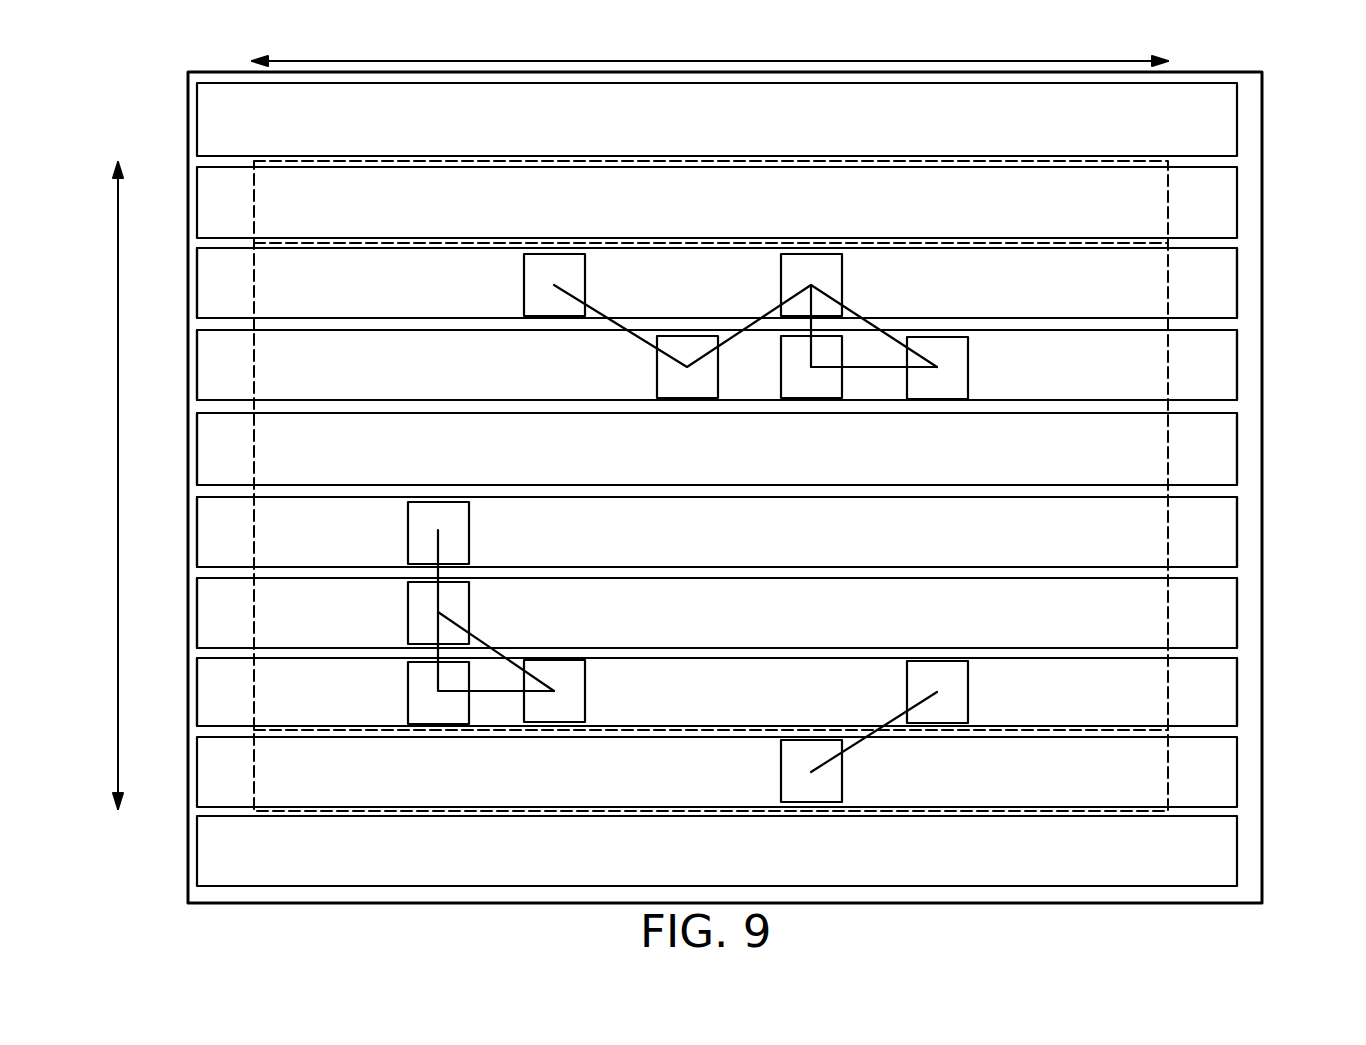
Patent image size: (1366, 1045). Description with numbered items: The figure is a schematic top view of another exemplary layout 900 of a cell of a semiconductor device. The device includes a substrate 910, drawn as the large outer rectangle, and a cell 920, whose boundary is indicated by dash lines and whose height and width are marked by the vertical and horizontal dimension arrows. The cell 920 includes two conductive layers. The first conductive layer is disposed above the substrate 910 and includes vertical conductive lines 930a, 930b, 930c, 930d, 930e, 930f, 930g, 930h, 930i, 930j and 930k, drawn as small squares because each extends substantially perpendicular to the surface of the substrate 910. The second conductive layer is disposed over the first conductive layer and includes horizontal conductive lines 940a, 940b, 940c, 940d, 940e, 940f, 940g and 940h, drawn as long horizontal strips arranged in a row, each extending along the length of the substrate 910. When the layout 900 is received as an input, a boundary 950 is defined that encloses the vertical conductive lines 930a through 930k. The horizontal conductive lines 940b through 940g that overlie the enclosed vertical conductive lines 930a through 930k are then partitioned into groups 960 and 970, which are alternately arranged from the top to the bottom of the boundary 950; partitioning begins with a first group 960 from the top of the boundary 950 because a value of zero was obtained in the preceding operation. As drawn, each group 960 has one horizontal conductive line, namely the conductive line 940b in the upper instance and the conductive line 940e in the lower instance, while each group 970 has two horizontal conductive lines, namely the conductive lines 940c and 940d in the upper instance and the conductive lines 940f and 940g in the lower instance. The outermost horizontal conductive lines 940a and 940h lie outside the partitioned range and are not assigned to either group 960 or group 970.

The layout 900 is at (178, 58).
The substrate 910 is at (1262, 117).
The cell 920 is at (803, 160).
The boundary 950 is at (597, 246).
The first group 960 is at (197, 285).
The group 970 is at (188, 367).
The vertical conductive line 930a is at (524, 283).
The vertical conductive line 930b is at (811, 254).
The vertical conductive line 930c is at (657, 369).
The vertical conductive line 930d is at (811, 398).
The vertical conductive line 930e is at (970, 368).
The vertical conductive line 930f is at (408, 532).
The vertical conductive line 930g is at (408, 612).
The vertical conductive line 930h is at (408, 692).
The vertical conductive line 930i is at (586, 694).
The vertical conductive line 930j is at (969, 692).
The vertical conductive line 930k is at (781, 773).
The horizontal conductive line 940a is at (1237, 203).
The horizontal conductive line 940b is at (1237, 286).
The horizontal conductive line 940c is at (1237, 365).
The horizontal conductive line 940d is at (1237, 450).
The horizontal conductive line 940e is at (1237, 531).
The horizontal conductive line 940f is at (1237, 611).
The horizontal conductive line 940g is at (1237, 690).
The horizontal conductive line 940h is at (1237, 770).